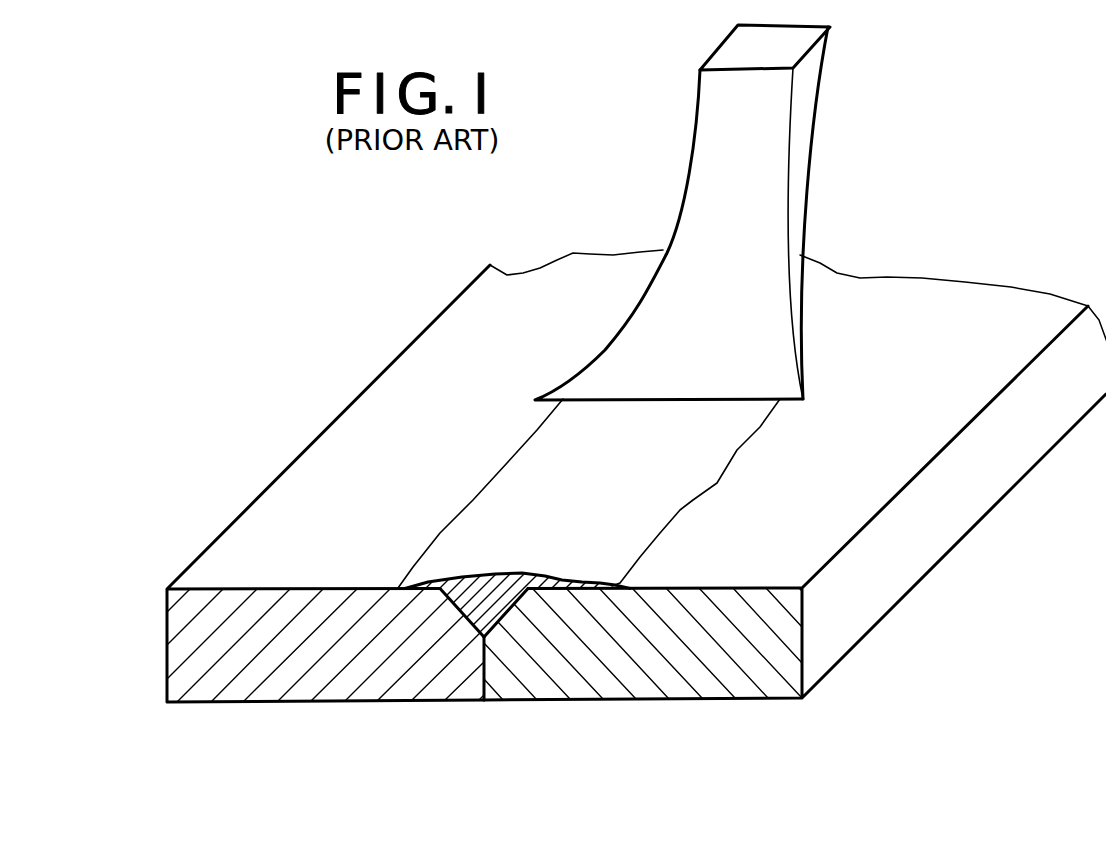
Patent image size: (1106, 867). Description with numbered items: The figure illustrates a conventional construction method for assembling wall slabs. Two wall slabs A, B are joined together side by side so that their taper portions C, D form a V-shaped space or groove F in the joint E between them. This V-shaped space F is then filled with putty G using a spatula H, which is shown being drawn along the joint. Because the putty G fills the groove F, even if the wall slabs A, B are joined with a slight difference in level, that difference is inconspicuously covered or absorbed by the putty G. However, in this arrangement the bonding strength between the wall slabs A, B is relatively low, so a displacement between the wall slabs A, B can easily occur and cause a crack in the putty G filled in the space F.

The wall slab A is at (238, 660).
The wall slab B is at (708, 680).
The taper portion C is at (452, 595).
The taper portion D is at (560, 578).
The joint E is at (484, 700).
The V-shaped space F is at (512, 608).
The putty G is at (502, 524).
The spatula H is at (750, 238).